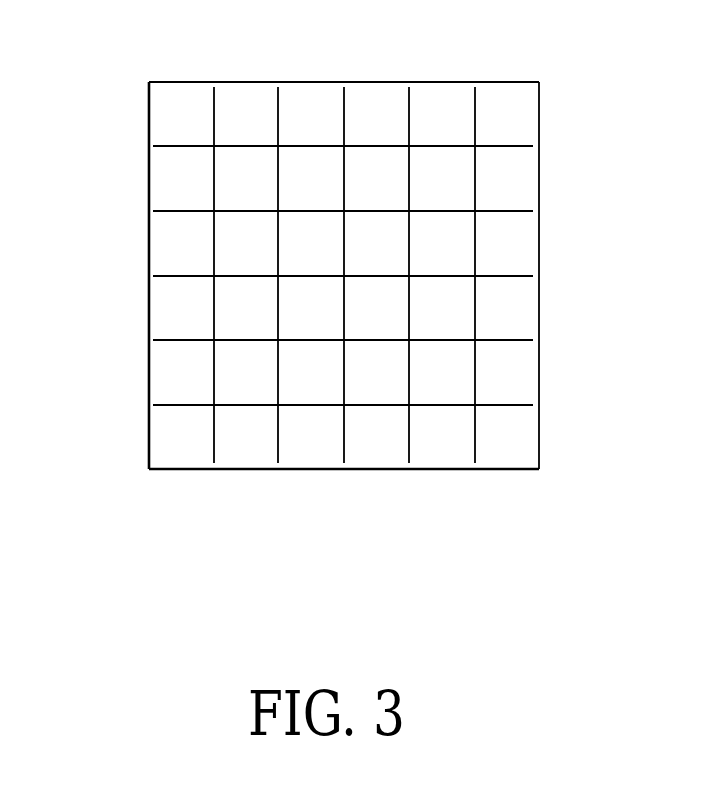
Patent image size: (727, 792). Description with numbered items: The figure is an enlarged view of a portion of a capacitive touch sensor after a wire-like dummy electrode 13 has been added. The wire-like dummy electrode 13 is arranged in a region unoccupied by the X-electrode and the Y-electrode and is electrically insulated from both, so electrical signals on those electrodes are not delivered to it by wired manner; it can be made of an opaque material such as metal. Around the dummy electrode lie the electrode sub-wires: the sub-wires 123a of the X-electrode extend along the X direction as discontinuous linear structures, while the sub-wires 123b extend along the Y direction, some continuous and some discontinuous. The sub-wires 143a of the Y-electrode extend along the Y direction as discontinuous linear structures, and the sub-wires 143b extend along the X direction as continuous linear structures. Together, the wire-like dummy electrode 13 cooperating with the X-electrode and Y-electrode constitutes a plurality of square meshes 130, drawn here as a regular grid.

The square meshes 130 is at (177, 105).
The wire-like dummy electrode 13 is at (183, 211).
The sub-wires 123a is at (540, 181).
The sub-wires 123b is at (370, 82).
The sub-wires 143a is at (359, 470).
The sub-wires 143b is at (148, 287).